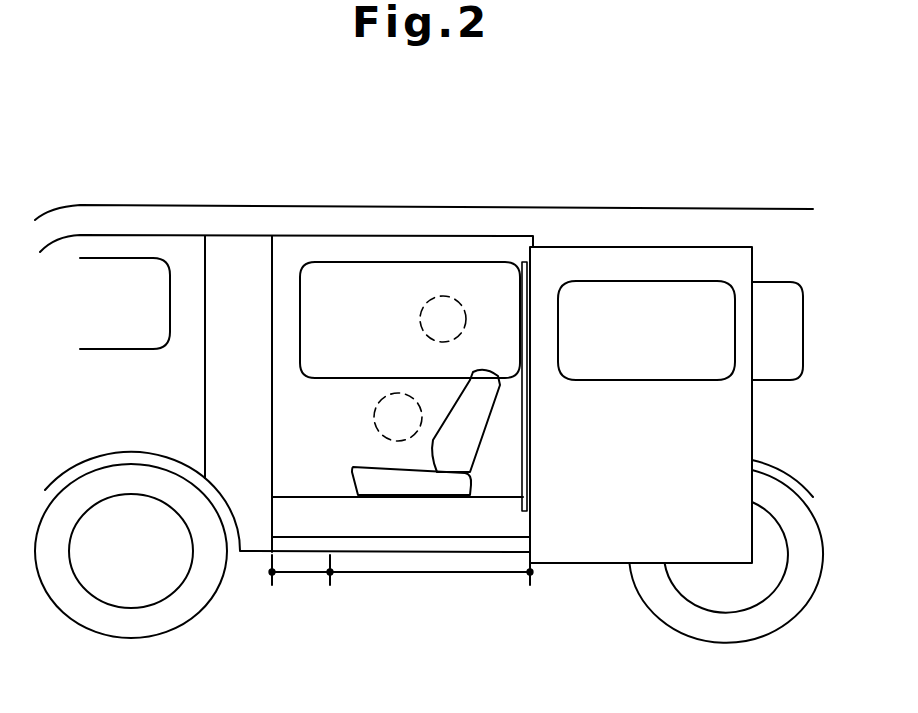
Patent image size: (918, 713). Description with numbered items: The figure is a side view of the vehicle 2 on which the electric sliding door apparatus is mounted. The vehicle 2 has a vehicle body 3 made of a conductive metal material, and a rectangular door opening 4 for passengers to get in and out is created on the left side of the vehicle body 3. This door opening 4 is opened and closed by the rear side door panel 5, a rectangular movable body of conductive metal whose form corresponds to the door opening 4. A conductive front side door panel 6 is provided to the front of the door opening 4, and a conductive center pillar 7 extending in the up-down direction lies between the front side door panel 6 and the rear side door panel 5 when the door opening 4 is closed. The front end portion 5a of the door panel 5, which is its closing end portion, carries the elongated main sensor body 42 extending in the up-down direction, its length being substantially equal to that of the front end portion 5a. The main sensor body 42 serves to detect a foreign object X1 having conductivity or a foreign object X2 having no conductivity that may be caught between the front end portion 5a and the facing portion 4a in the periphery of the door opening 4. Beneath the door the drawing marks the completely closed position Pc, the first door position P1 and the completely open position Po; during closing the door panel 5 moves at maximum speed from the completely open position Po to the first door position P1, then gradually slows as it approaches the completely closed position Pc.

The vehicle 2 is at (625, 210).
The vehicle body 3 is at (524, 212).
The door opening 4 is at (381, 236).
The facing portion 4a is at (274, 436).
The rear side door panel 5 is at (752, 415).
The front end portion 5a is at (526, 523).
The front side door panel 6 is at (133, 247).
The center pillar 7 is at (233, 247).
The main sensor body 42 is at (520, 418).
The foreign object having conductivity X1 is at (423, 312).
The foreign object having no conductivity X2 is at (378, 405).
The completely closed position Pc is at (394, 583).
The first door position P1 is at (327, 583).
The completely open position Po is at (530, 583).